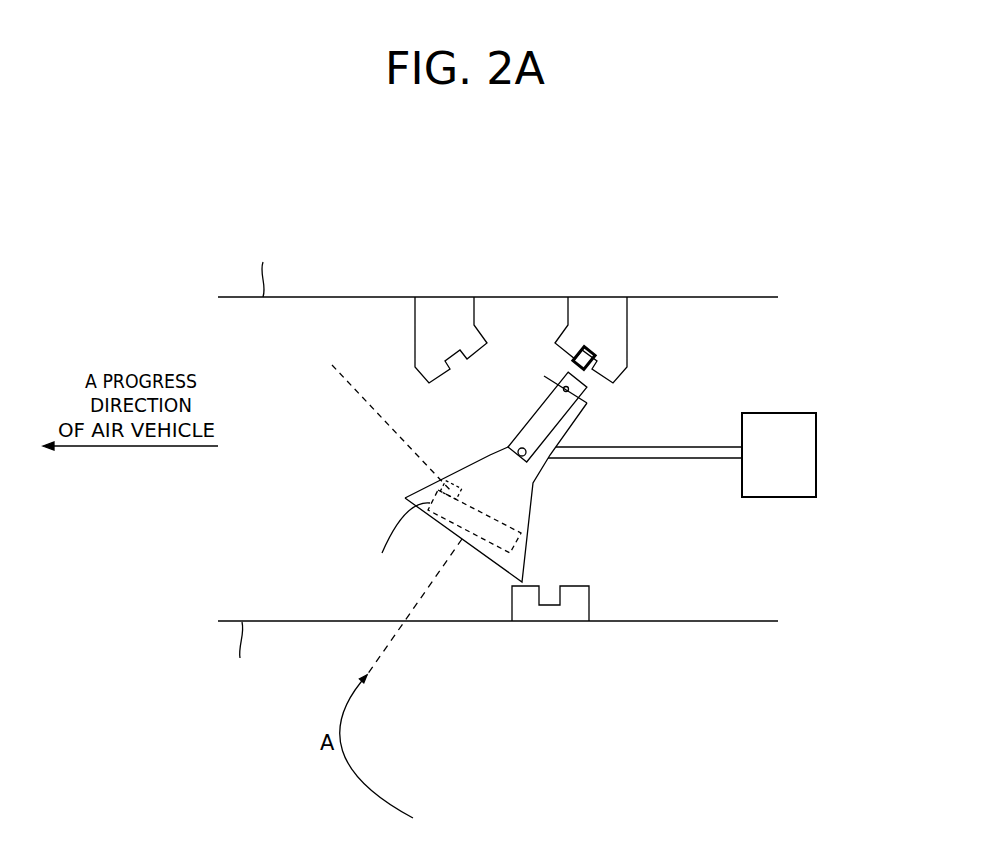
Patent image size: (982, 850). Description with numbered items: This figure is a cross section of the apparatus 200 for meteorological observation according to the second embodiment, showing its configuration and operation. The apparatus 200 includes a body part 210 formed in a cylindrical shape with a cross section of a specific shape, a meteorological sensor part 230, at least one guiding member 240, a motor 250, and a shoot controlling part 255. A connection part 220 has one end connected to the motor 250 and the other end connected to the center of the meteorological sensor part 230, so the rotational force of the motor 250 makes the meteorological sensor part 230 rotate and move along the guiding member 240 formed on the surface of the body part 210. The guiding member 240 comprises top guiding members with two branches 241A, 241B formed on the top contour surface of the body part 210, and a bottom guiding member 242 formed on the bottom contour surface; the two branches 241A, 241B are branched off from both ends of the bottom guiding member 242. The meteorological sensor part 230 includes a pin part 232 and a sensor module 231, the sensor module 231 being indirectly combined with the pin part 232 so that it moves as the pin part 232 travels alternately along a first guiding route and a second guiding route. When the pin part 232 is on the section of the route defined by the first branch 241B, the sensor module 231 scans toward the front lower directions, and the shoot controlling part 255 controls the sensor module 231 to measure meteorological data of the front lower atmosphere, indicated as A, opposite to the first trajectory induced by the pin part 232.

The apparatus for meteorological observation 200 is at (158, 223).
The body part 210 is at (748, 297).
The connection part 220 is at (636, 460).
The meteorological sensor part 230 is at (476, 422).
The sensor module 231 is at (432, 506).
The pin part 232 is at (578, 356).
The guiding member 240 is at (524, 271).
The branch of top guiding member 241A is at (447, 297).
The first branch of top guiding member 241B is at (600, 297).
The bottom guiding member 242 is at (537, 621).
The motor 250 is at (795, 422).
The shoot controlling part 255 is at (382, 418).